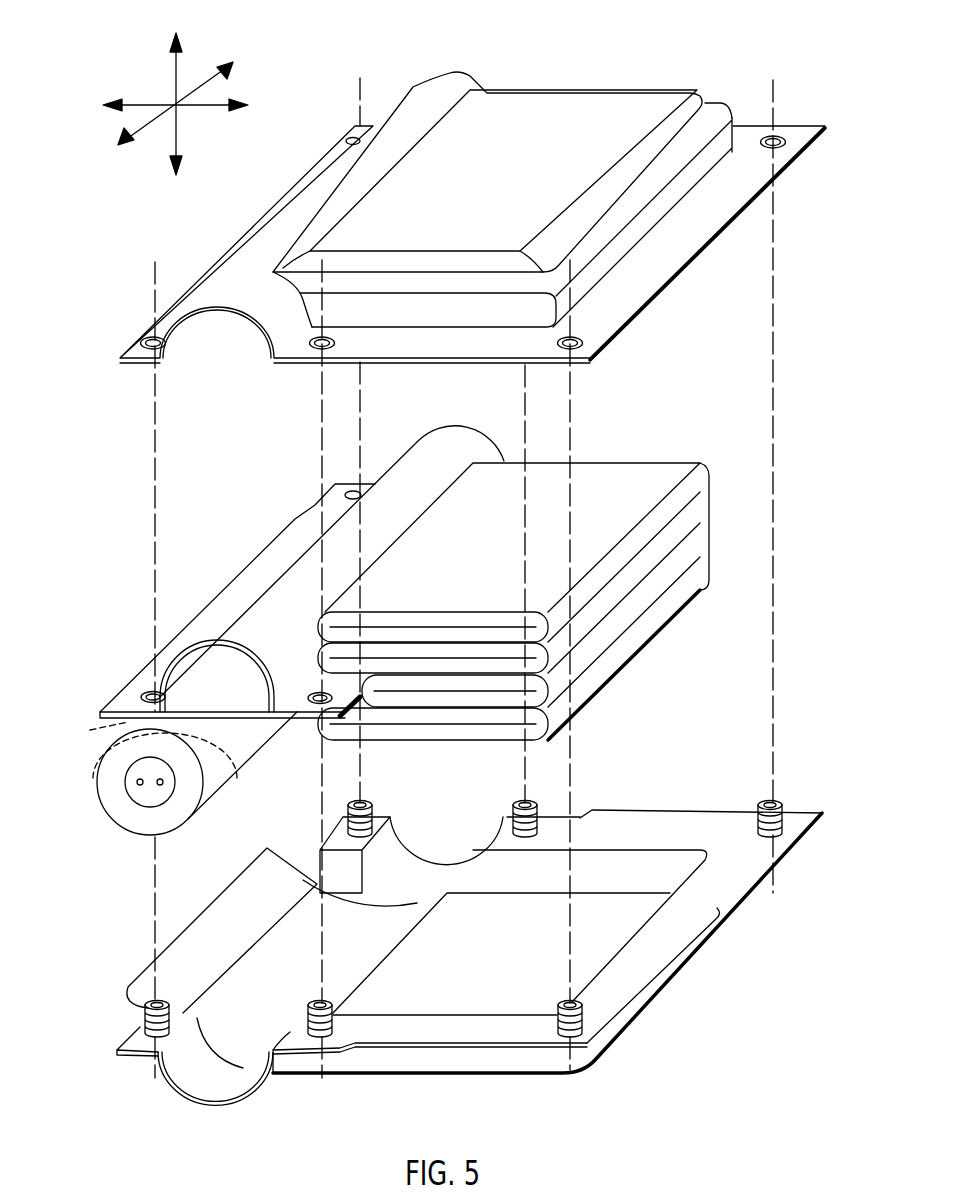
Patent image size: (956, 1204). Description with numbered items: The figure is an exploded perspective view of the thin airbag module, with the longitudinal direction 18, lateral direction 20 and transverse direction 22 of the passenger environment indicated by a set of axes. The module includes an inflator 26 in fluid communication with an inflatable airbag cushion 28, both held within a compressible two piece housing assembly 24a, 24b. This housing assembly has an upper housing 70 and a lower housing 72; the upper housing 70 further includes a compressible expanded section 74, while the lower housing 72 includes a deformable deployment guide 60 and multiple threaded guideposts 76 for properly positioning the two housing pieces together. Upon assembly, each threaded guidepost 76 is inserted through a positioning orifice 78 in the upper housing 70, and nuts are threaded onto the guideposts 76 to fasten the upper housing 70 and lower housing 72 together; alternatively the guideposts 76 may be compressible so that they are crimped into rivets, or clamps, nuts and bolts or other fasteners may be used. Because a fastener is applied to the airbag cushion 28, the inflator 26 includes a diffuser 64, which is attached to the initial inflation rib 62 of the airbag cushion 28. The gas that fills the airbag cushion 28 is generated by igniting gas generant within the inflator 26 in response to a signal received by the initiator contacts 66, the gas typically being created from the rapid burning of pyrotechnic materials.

The longitudinal direction 18 is at (205, 108).
The lateral direction 20 is at (208, 75).
The transverse direction 22 is at (177, 67).
The upper housing piece of the compressible two piece housing assembly 24a is at (688, 250).
The lower housing piece of the compressible two piece housing assembly 24b is at (630, 978).
The inflator 26 is at (128, 722).
The inflatable airbag cushion 28 is at (622, 652).
The deformable deployment guide 60 is at (150, 974).
The initial inflation rib 62 is at (97, 782).
The diffuser 64 is at (223, 650).
The initiator contacts 66 is at (160, 786).
The upper housing 70 is at (552, 103).
The lower housing 72 is at (668, 945).
The compressible expanded section 74 is at (700, 100).
The threaded guideposts 76 is at (372, 812).
The positioning orifice 78 is at (350, 135).